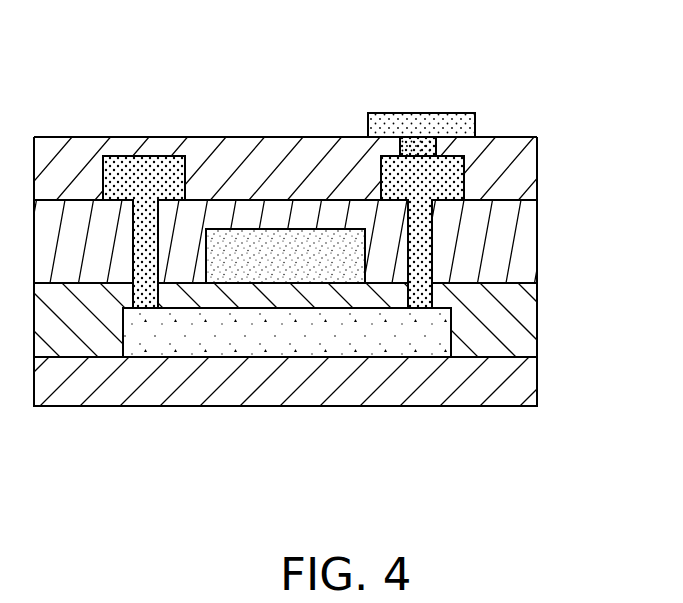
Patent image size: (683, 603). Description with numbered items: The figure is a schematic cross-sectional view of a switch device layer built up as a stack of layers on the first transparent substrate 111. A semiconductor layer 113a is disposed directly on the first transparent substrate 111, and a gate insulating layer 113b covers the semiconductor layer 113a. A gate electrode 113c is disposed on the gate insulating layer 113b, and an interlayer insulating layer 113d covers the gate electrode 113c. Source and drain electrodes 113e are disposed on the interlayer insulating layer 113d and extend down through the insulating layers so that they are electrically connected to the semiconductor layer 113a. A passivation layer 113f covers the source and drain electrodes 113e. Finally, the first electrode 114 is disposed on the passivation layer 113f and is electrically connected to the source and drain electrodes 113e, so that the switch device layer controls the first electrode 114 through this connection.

The first transparent substrate 111 is at (507, 377).
The semiconductor layer 113a is at (295, 322).
The gate insulating layer 113b is at (503, 322).
The gate electrode 113c is at (282, 253).
The interlayer insulating layer 113d is at (502, 238).
The source and drain electrodes 113e is at (158, 188).
The passivation layer 113f is at (522, 166).
The first electrode 114 is at (425, 130).